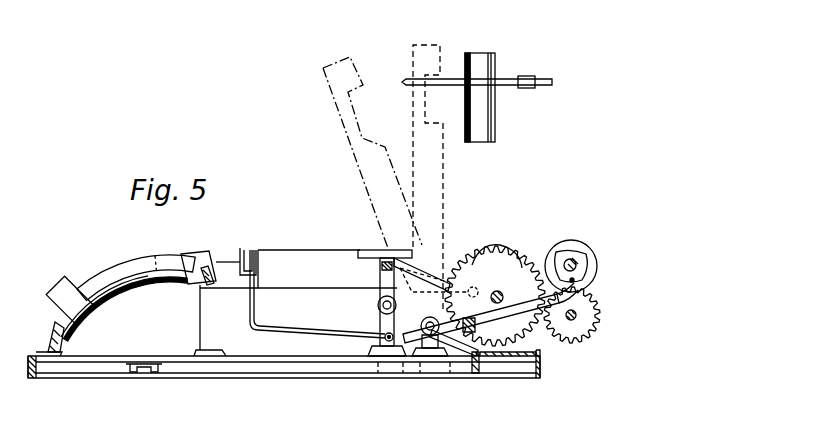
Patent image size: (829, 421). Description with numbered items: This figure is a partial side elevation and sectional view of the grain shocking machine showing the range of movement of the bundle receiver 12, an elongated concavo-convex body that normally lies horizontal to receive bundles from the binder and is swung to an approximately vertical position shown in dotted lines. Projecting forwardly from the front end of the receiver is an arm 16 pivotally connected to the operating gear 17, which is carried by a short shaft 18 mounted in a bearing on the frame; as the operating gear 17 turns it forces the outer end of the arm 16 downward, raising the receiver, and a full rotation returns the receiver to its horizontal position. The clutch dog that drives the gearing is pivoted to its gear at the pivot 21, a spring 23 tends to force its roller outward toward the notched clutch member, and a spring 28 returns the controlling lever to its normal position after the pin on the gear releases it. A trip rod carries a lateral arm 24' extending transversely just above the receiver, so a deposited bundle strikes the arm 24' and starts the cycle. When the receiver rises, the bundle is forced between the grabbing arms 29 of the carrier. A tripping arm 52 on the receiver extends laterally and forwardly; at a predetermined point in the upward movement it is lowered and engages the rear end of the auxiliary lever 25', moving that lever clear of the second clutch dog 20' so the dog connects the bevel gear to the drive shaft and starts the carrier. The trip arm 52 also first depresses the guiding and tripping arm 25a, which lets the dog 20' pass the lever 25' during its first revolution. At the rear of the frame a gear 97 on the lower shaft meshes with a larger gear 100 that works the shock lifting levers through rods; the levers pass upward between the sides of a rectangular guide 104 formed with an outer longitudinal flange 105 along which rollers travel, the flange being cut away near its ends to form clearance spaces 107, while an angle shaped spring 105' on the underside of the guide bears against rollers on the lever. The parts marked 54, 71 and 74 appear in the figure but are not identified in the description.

The bundle receiver 12 is at (312, 250).
The arm 16 is at (428, 284).
The operating gear 17 is at (495, 284).
The short shaft 18 is at (502, 284).
The second clutch dog 20' is at (596, 304).
The pivot 21 is at (584, 280).
The spring 23 is at (576, 270).
The lateral arm 24' is at (243, 248).
The auxiliary lever 25' is at (481, 318).
The guiding and tripping arm 25a is at (478, 356).
The spring 28 is at (442, 345).
The grabbing arms 29 is at (404, 81).
The tripping arm 52 is at (397, 250).
The tube 54 is at (496, 62).
The track plate 71 is at (286, 391).
The base plate 74 is at (284, 385).
The gear 97 is at (576, 343).
The larger gear 100 is at (462, 275).
The rectangular guide 104 is at (72, 327).
The outer longitudinal flange 105 is at (136, 268).
The angle shaped spring 105' is at (124, 308).
The clearance spaces 107 is at (72, 302).